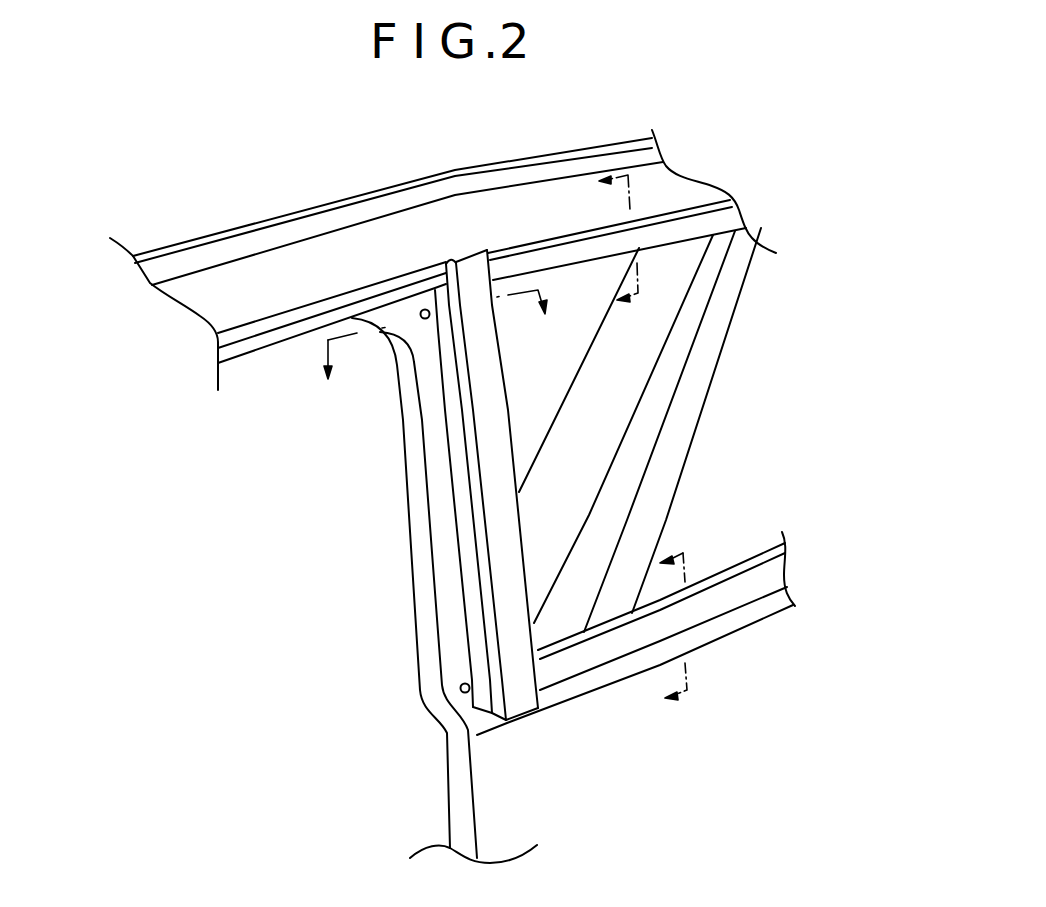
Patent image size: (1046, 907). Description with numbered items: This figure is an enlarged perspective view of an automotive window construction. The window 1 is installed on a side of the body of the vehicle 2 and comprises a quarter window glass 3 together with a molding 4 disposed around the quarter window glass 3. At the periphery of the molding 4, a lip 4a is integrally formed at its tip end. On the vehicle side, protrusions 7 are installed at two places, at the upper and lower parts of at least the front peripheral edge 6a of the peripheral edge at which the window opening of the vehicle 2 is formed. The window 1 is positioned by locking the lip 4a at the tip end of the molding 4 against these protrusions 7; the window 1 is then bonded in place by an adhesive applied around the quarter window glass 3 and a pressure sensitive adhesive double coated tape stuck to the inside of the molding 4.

The window 1 is at (744, 491).
The vehicle 2 is at (403, 260).
The quarter window glass 3 is at (742, 540).
The molding 4 is at (598, 655).
The lip 4a is at (472, 575).
The front peripheral edge 6a is at (443, 491).
The protrusions 7 is at (421, 317).